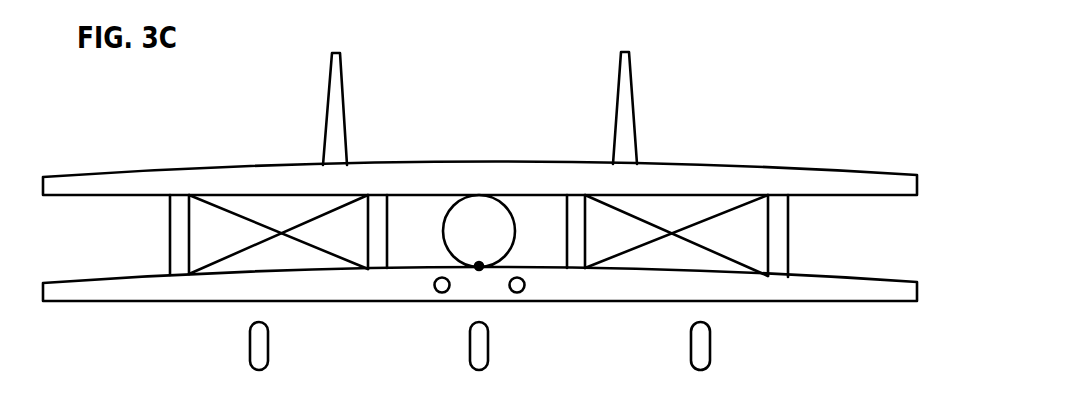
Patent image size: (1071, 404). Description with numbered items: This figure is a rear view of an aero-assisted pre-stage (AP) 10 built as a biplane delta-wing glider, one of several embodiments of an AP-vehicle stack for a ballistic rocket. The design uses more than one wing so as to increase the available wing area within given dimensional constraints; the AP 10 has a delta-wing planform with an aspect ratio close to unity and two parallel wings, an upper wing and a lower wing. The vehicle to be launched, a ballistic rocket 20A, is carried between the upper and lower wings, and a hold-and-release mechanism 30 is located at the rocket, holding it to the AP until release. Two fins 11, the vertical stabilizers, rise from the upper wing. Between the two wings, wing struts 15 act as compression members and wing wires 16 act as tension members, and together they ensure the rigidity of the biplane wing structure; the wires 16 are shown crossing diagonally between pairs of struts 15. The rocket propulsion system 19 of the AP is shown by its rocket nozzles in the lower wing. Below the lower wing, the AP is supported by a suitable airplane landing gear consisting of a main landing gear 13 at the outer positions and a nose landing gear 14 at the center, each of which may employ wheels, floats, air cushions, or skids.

The aero-assisted pre-stage 10 is at (773, 168).
The vertical stabilizer 11 is at (345, 92).
The main landing gear 13 is at (248, 353).
The nose landing gear 14 is at (468, 347).
The wing struts 15 is at (192, 222).
The wing wires 16 is at (345, 208).
The rocket propulsion system 19 is at (448, 289).
The ballistic rocket 20A is at (508, 203).
The hold-and-release mechanism 30 is at (480, 262).